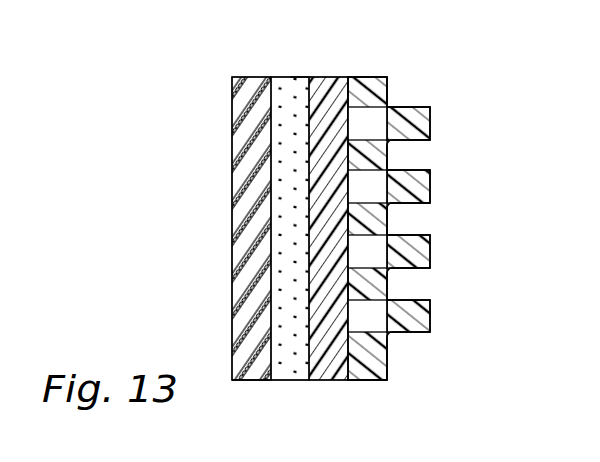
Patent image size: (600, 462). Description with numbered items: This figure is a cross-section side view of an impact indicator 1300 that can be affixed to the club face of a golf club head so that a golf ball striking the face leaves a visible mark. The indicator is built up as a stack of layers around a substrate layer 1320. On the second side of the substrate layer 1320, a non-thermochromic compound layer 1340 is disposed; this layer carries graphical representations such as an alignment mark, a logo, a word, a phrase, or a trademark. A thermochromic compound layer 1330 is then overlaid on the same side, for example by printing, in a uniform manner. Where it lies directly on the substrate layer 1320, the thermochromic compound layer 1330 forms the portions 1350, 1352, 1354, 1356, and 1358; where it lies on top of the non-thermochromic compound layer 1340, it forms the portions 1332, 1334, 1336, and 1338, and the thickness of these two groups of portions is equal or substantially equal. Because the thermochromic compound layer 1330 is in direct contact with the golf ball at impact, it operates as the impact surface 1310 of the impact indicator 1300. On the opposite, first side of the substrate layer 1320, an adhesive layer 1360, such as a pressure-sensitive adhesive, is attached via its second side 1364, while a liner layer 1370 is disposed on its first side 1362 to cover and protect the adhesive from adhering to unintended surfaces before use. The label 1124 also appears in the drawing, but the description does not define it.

The impact indicator 1300 is at (204, 74).
The impact surface 1310 is at (503, 226).
The interface layer 1124 is at (352, 84).
The substrate layer 1320 is at (325, 92).
The thermochromic compound layer 1330 is at (366, 382).
The portion of the thermochromic compound layer 1332 is at (431, 124).
The portion of the thermochromic compound layer 1334 is at (431, 187).
The portion of the thermochromic compound layer 1336 is at (431, 251).
The portion of the thermochromic compound layer 1338 is at (431, 315).
The non-thermochromic compound layer 1340 is at (368, 322).
The portion of the thermochromic compound layer 1350 is at (388, 94).
The portion of the thermochromic compound layer 1352 is at (388, 146).
The portion of the thermochromic compound layer 1354 is at (388, 210).
The portion of the thermochromic compound layer 1356 is at (388, 274).
The portion of the thermochromic compound layer 1358 is at (388, 340).
The adhesive layer 1360 is at (288, 366).
The first side of the adhesive layer 1362 is at (256, 368).
The second side of the adhesive layer 1364 is at (299, 93).
The liner layer 1370 is at (245, 276).